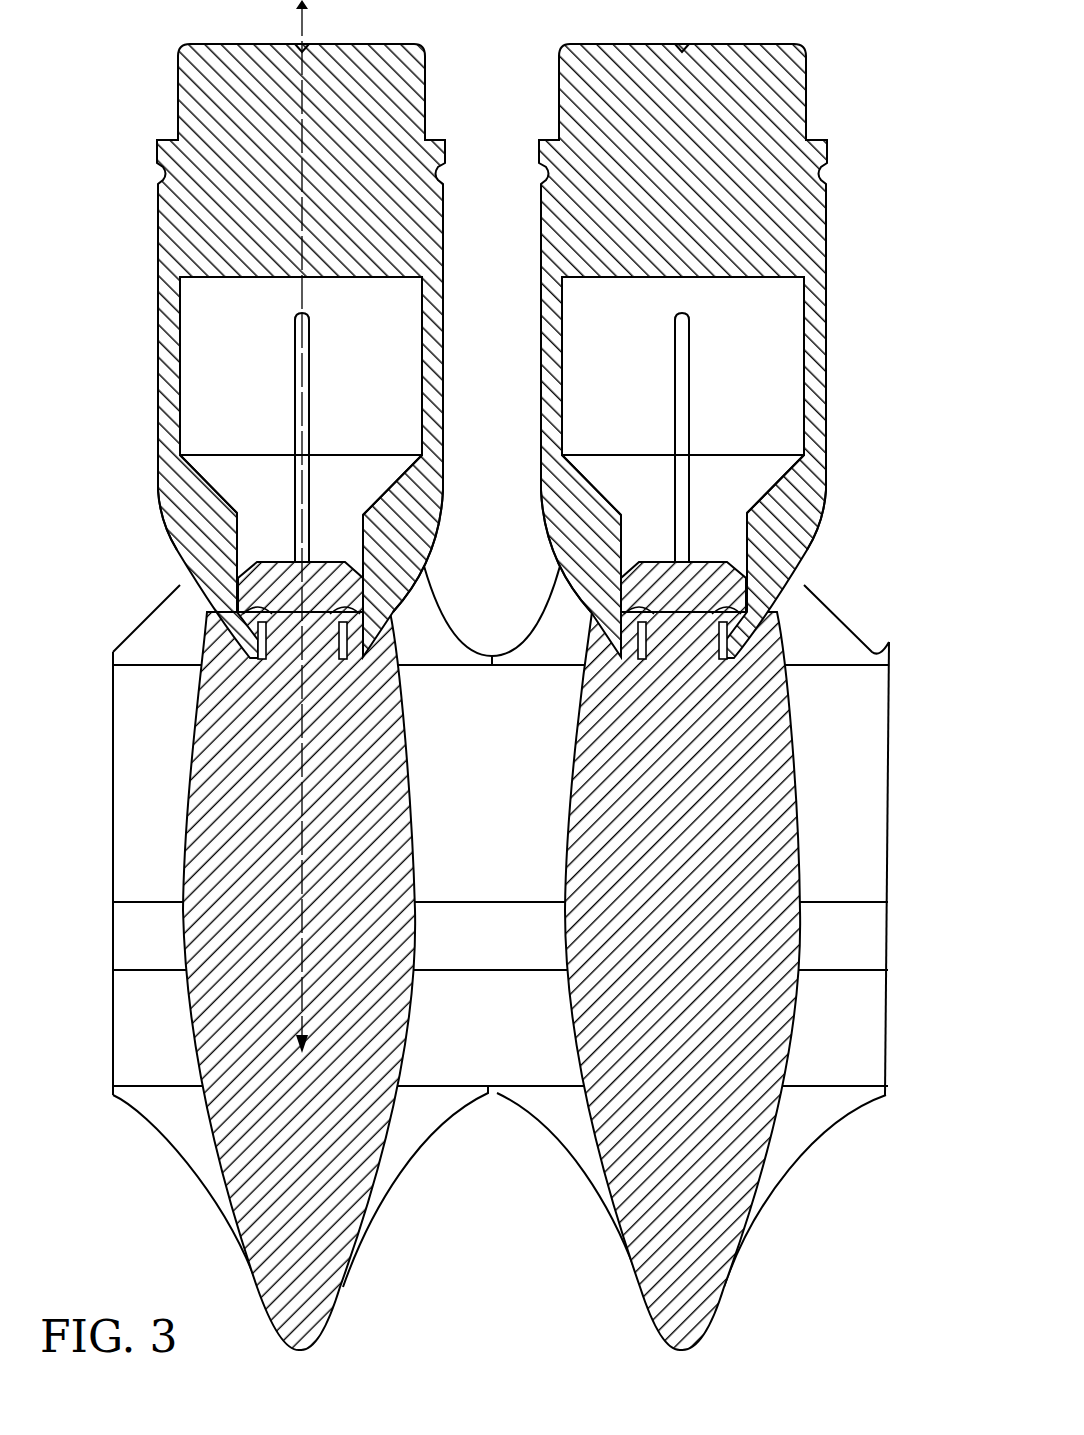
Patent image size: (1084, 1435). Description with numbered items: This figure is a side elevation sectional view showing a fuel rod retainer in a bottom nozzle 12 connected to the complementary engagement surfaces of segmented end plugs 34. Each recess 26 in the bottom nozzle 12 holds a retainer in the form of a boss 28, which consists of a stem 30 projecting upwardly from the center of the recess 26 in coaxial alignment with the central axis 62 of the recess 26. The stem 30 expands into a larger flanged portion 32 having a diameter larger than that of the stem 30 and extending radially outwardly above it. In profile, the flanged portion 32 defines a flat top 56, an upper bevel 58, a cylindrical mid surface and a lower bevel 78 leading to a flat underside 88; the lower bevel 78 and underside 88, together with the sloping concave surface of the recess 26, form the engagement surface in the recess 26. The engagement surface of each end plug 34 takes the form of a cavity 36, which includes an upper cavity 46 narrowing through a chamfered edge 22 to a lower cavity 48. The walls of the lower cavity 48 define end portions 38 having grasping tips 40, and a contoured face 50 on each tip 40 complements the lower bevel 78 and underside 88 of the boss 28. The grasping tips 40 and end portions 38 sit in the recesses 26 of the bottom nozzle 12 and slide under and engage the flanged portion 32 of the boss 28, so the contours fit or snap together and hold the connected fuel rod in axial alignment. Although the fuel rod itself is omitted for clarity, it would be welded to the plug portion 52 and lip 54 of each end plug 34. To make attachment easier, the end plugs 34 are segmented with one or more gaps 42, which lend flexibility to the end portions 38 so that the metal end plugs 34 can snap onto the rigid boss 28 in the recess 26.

The bottom nozzle 12 is at (888, 845).
The chamfered edge 22 is at (395, 500).
The recess 26 is at (195, 565).
The boss 28 is at (320, 562).
The stem 30 is at (237, 650).
The flanged portion 32 is at (290, 598).
The end plug 34 is at (183, 216).
The cavity 36 is at (357, 470).
The end portion 38 is at (415, 548).
The grasping tip 40 is at (250, 650).
The gap 42 is at (298, 320).
The upper cavity 46 is at (206, 376).
The lower cavity 48 is at (232, 532).
The contoured face 50 is at (255, 614).
The plug portion 52 is at (790, 66).
The lip 54 is at (818, 150).
The flat top 56 is at (278, 560).
The upper bevel 58 is at (347, 610).
The central axis 62 is at (308, 10).
The lower bevel 78 is at (365, 612).
The underside 88 is at (353, 657).